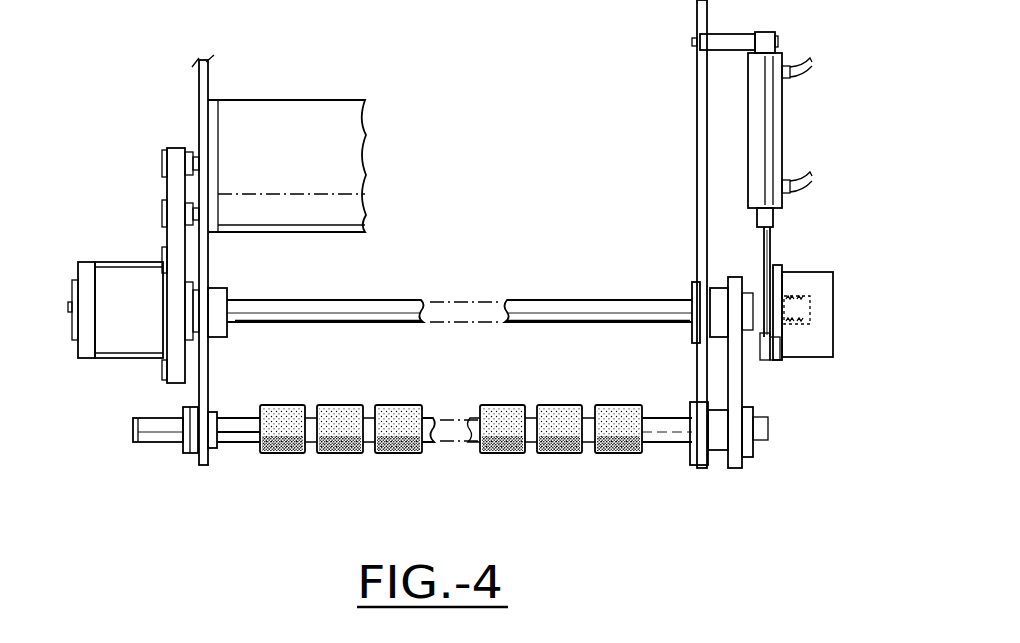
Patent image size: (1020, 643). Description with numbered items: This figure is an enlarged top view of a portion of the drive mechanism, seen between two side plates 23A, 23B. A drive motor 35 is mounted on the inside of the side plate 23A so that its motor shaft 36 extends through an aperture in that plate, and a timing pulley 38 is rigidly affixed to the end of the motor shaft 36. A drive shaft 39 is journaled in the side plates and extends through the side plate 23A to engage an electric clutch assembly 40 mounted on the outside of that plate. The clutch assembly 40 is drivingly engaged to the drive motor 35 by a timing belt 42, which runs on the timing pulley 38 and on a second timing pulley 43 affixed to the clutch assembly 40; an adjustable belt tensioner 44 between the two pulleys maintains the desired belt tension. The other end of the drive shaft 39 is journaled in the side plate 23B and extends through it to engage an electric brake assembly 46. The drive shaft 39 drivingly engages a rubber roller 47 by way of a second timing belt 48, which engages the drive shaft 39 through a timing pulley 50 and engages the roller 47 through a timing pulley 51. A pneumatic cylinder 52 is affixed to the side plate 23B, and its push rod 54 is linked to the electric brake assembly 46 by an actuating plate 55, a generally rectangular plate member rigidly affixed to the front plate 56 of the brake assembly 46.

The side plate 23A is at (199, 94).
The side plate 23B is at (697, 104).
The drive motor 35 is at (302, 103).
The motor shaft 36 is at (200, 155).
The timing pulley 38 is at (163, 167).
The drive shaft 39 is at (335, 325).
The electric clutch assembly 40 is at (113, 262).
The timing belt 42 is at (167, 213).
The second timing pulley 43 is at (163, 366).
The adjustable belt tensioner 44 is at (186, 217).
The electric brake assembly 46 is at (835, 318).
The rubber roller 47 is at (265, 453).
The second timing belt 48 is at (737, 372).
The timing pulley 50 is at (722, 288).
The timing pulley 51 is at (744, 456).
The pneumatic cylinder 52 is at (783, 135).
The push rod 54 is at (772, 252).
The actuating plate 55 is at (777, 362).
The front plate 56 is at (782, 283).